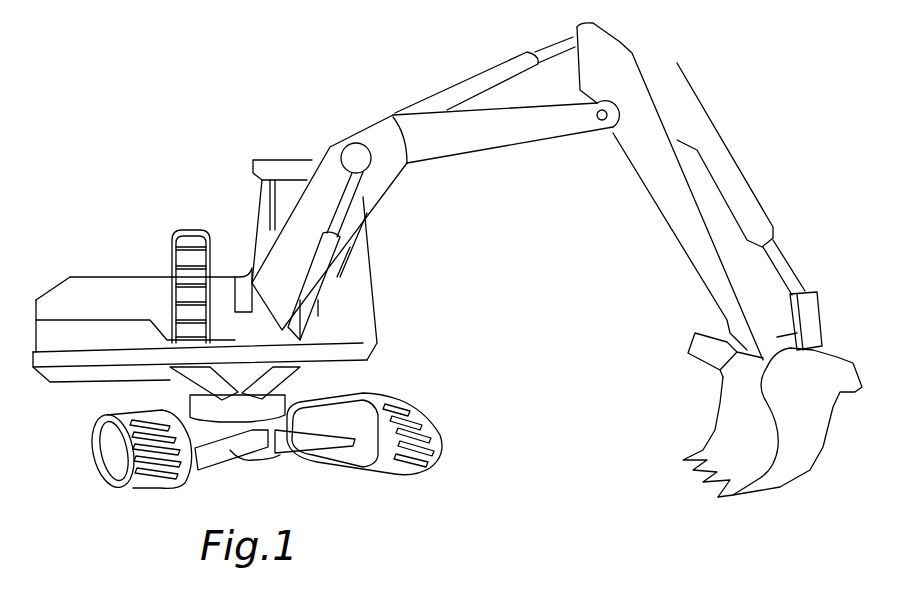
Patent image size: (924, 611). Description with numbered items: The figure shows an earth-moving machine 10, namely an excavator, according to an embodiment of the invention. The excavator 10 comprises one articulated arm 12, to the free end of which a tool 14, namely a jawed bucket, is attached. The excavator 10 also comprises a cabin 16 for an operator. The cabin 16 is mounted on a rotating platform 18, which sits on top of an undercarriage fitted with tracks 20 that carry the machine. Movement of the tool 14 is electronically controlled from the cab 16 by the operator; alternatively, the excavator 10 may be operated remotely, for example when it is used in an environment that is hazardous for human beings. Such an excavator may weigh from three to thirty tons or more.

The earth-moving machine 10 is at (170, 115).
The articulated arm 12 is at (733, 127).
The tool 14 is at (810, 433).
The cabin 16 is at (280, 167).
The rotating platform 18 is at (202, 408).
The tracks 20 is at (387, 405).